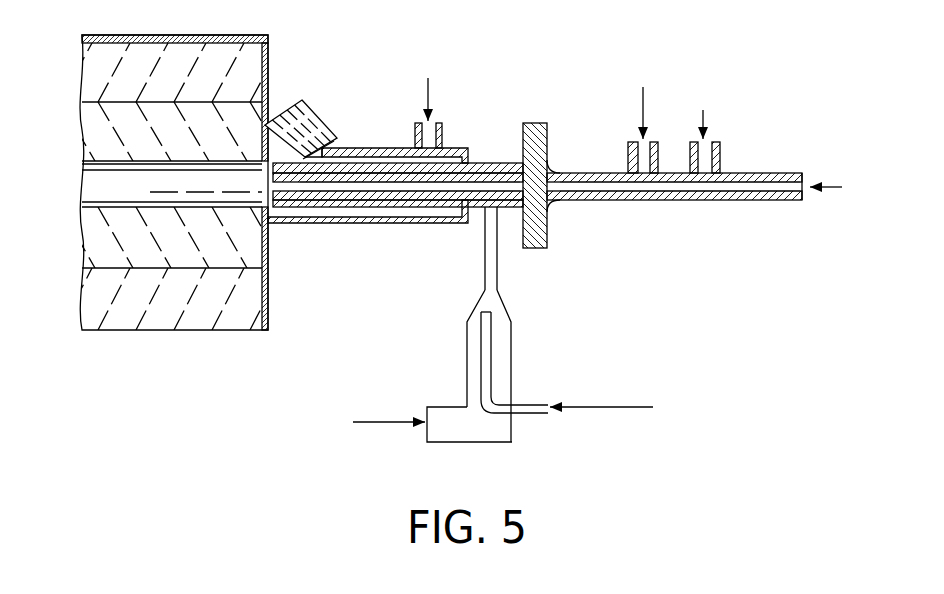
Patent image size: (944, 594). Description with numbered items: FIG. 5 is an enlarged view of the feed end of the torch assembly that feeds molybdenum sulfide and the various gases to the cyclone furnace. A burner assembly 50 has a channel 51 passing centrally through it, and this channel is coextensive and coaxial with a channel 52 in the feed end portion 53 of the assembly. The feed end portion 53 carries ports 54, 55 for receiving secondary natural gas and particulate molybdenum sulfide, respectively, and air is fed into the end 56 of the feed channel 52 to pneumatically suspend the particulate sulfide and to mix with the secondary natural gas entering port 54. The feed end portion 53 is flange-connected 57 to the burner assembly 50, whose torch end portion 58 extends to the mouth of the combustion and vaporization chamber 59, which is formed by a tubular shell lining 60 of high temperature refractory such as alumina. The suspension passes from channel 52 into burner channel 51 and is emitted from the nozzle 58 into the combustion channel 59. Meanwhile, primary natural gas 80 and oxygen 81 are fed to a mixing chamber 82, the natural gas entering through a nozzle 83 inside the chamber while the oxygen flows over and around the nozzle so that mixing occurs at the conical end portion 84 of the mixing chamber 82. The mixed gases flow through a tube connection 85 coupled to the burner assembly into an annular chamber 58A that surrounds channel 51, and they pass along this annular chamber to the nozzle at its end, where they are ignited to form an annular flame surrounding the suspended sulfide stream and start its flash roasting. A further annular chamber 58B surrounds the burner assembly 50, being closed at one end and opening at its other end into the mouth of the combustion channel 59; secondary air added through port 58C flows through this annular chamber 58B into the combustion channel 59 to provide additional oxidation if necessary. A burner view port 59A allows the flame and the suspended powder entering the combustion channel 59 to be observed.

The burner assembly 50 is at (491, 158).
The channel 51 is at (457, 184).
The channel 52 is at (757, 189).
The feed end portion 53 is at (707, 200).
The port 54 is at (651, 102).
The port 55 is at (766, 124).
The end 56 is at (855, 196).
The flange connection 57 is at (527, 138).
The torch end portion 58 is at (314, 208).
The annular chamber 58A is at (390, 197).
The annular chamber 58B is at (375, 162).
The port 58C is at (441, 92).
The combustion and vaporization chamber 59 is at (100, 181).
The burner view port 59A is at (327, 93).
The shell lining 60 is at (100, 240).
The primary natural gas 80 is at (691, 421).
The oxygen 81 is at (382, 431).
The mixing chamber 82 is at (511, 345).
The nozzle 83 is at (491, 381).
The conical end portion 84 is at (500, 307).
The tube connection 85 is at (485, 266).